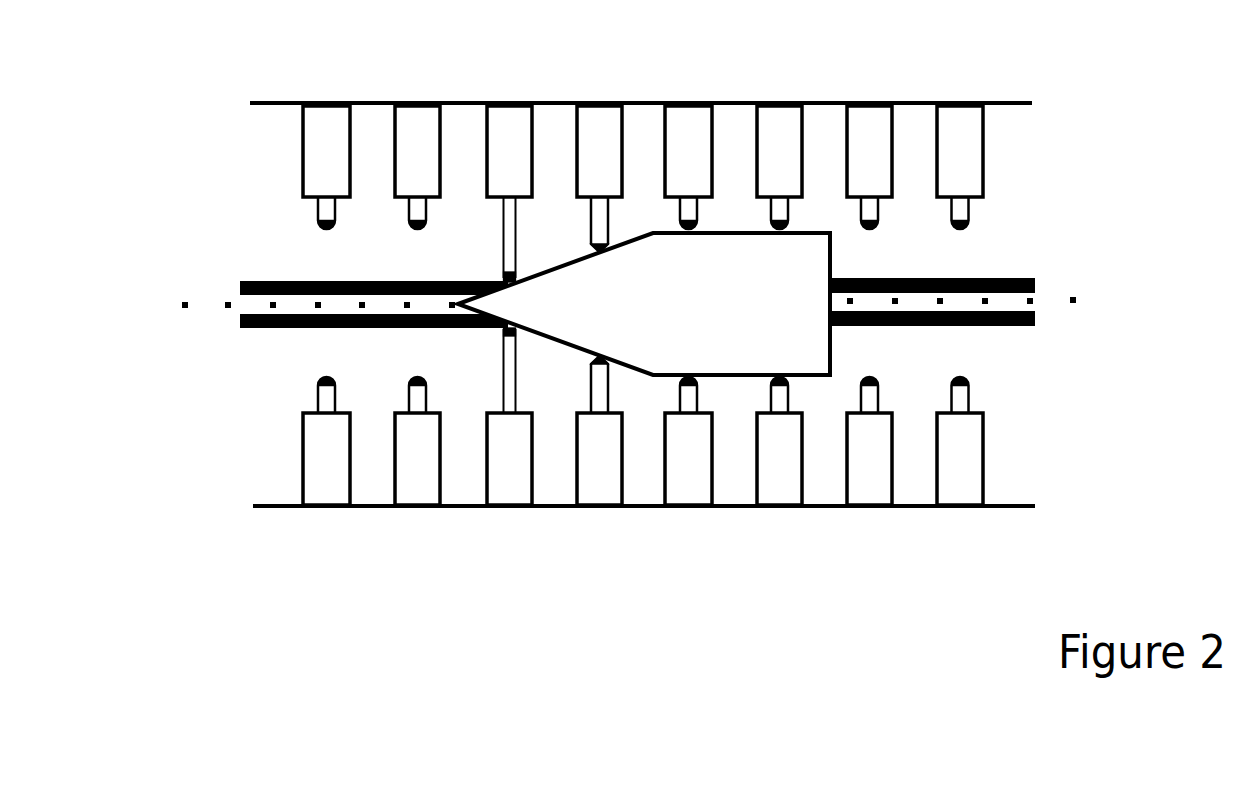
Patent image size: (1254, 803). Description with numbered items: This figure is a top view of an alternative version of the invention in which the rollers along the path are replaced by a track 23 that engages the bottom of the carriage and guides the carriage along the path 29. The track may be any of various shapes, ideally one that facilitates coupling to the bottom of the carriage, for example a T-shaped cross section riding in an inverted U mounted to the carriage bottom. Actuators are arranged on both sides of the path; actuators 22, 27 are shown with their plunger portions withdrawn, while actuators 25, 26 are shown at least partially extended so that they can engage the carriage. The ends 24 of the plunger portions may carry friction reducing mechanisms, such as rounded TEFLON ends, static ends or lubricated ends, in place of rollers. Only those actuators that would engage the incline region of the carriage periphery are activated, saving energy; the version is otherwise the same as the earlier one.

The actuator 22 is at (968, 142).
The track 23 is at (985, 325).
The ends of the plunger portion 24 is at (371, 419).
The actuator 25 is at (513, 490).
The actuator 26 is at (604, 492).
The actuator 27 is at (332, 120).
The path 29 is at (1077, 296).